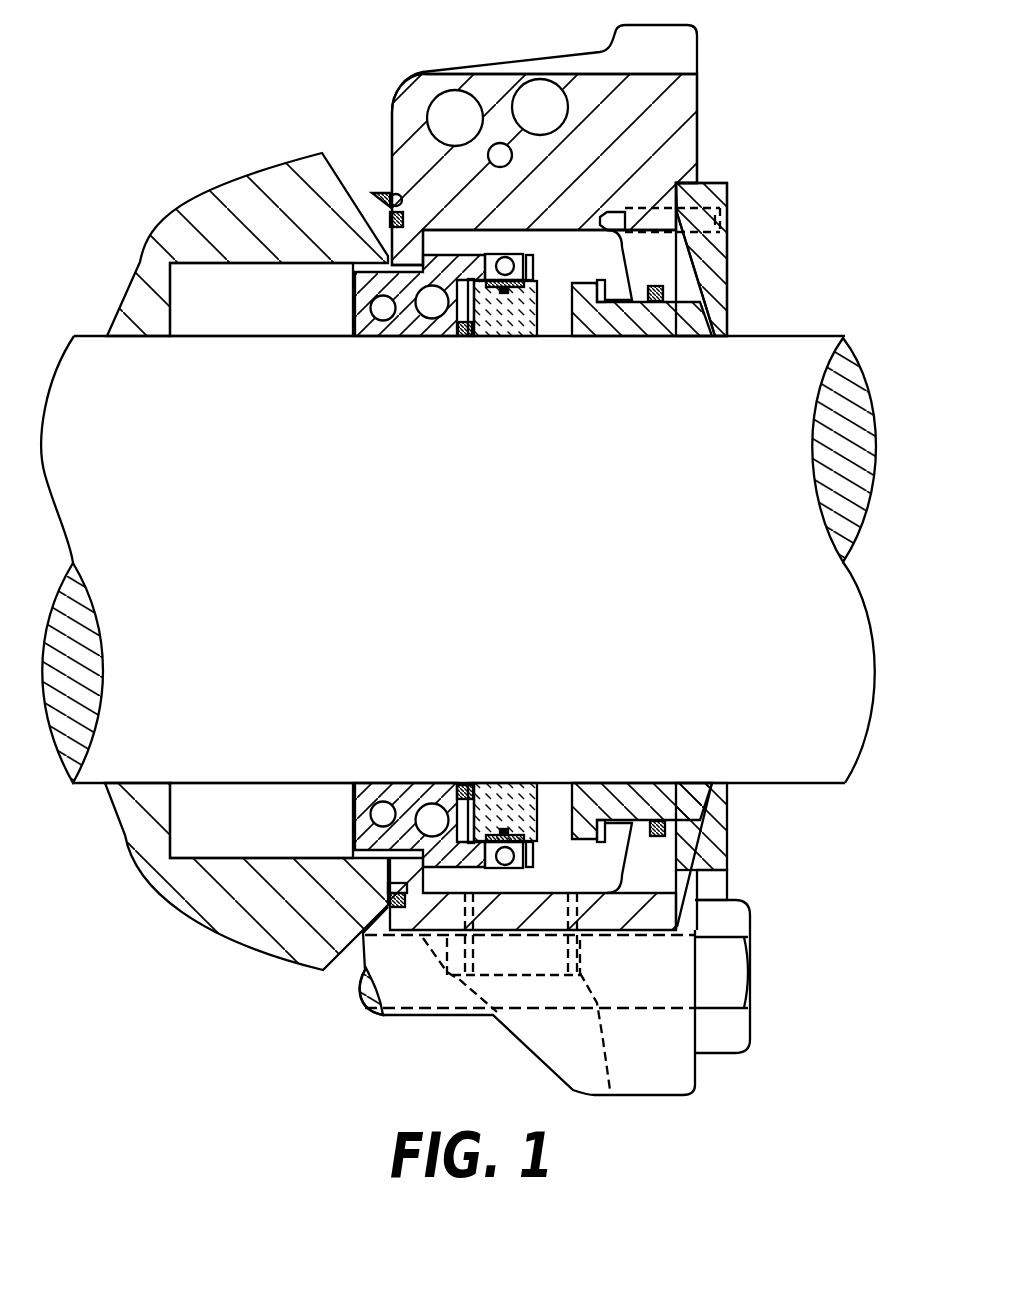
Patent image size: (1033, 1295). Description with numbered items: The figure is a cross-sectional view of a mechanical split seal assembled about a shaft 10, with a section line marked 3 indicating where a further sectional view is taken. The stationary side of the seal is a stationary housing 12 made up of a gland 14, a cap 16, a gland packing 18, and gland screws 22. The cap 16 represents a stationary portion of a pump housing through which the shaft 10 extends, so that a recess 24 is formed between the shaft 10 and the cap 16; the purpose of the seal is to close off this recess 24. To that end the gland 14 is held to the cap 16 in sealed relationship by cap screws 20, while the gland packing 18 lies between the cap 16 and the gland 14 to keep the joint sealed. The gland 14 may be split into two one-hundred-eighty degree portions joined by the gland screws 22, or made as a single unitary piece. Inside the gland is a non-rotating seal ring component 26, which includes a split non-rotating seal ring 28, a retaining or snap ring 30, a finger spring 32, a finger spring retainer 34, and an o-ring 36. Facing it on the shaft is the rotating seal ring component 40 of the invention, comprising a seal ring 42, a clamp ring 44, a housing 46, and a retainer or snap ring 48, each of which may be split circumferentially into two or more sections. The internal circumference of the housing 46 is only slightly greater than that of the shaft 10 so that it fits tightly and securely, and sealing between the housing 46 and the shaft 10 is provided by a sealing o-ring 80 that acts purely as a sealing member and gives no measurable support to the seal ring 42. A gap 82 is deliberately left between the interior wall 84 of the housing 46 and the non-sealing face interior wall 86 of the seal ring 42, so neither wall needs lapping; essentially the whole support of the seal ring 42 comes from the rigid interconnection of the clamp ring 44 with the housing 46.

The shaft 10 is at (810, 377).
The stationary housing 12 is at (245, 152).
The gland 14 is at (690, 120).
The cap 16 is at (165, 227).
The gland packing 18 is at (383, 188).
The cap screws 20 is at (742, 963).
The gland screws 22 is at (527, 95).
The recess 24 is at (280, 310).
The non-rotating seal ring component 26 is at (640, 349).
The split non-rotating seal ring 28 is at (598, 320).
The retaining or snap ring 30 is at (605, 280).
The finger spring 32 is at (693, 256).
The finger spring retainer 34 is at (726, 226).
The o-ring 36 is at (668, 288).
The rotating seal ring component 40 is at (380, 350).
The seal ring 42 is at (522, 325).
The clamp ring 44 is at (535, 277).
The housing 46 is at (413, 328).
The retainer or snap ring 48 is at (503, 297).
The sealing o-ring 80 is at (460, 787).
The gap 82 is at (475, 810).
The interior wall 84 is at (467, 828).
The non-sealing face interior wall 86 is at (498, 812).
The section line 3 is at (515, 264).